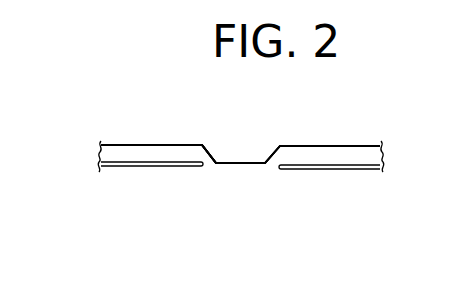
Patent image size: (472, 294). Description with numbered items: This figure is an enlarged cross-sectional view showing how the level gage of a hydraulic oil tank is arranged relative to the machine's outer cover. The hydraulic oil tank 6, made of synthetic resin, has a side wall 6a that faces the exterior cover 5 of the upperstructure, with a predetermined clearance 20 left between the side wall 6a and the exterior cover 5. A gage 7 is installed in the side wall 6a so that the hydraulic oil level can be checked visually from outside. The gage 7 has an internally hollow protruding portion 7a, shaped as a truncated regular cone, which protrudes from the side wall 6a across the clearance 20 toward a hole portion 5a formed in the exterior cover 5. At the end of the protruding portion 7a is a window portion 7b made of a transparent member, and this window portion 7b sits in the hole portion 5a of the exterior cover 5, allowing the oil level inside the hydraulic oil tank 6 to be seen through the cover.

The clearance 20 is at (125, 145).
The hydraulic oil tank 6 is at (152, 128).
The side wall 6a is at (170, 168).
The exterior cover 5 is at (134, 168).
The hole portion 5a is at (209, 168).
The gage 7 is at (241, 167).
The protruding portion 7a is at (284, 169).
The window portion 7b is at (256, 167).